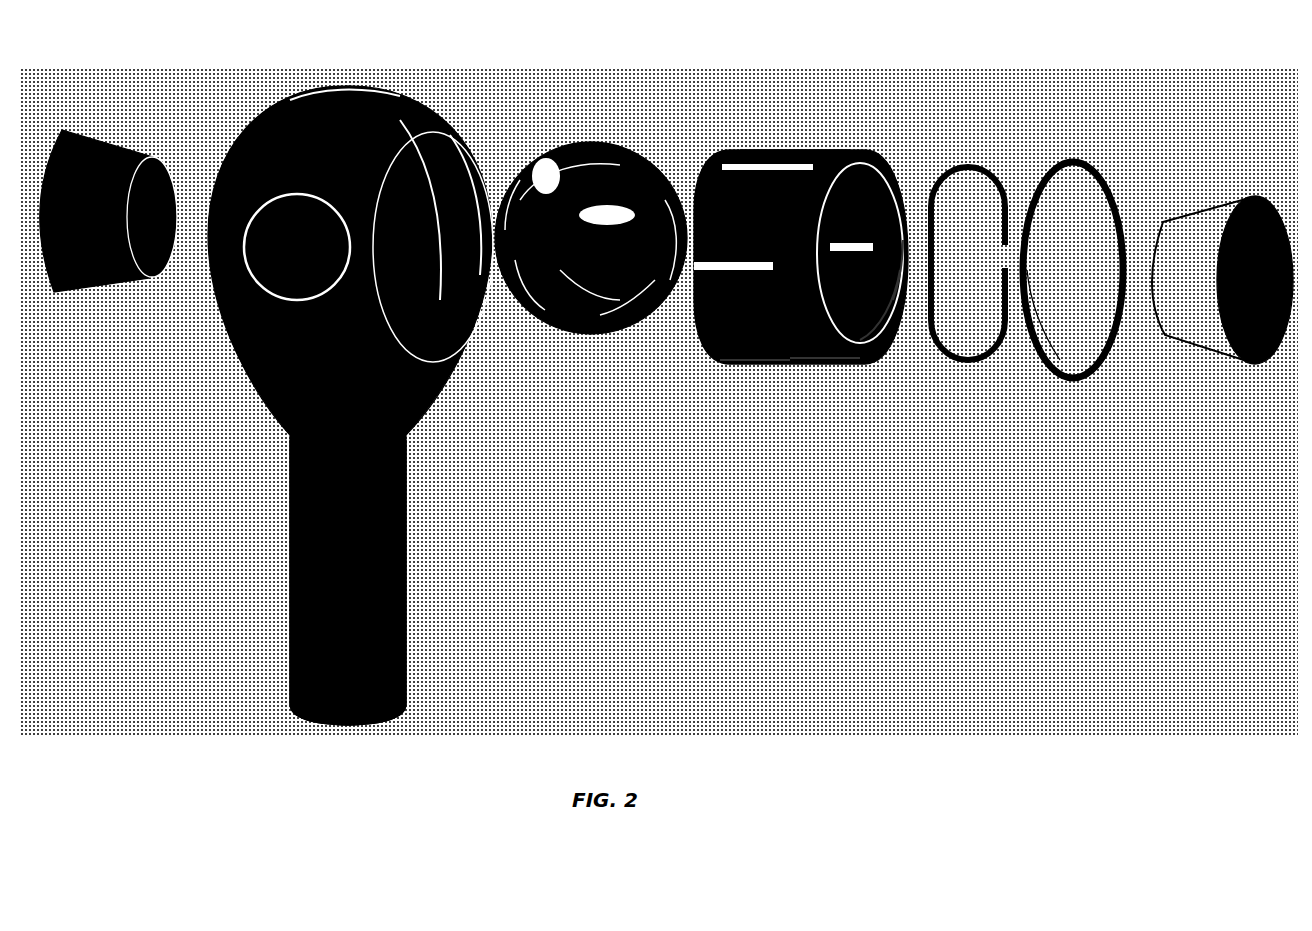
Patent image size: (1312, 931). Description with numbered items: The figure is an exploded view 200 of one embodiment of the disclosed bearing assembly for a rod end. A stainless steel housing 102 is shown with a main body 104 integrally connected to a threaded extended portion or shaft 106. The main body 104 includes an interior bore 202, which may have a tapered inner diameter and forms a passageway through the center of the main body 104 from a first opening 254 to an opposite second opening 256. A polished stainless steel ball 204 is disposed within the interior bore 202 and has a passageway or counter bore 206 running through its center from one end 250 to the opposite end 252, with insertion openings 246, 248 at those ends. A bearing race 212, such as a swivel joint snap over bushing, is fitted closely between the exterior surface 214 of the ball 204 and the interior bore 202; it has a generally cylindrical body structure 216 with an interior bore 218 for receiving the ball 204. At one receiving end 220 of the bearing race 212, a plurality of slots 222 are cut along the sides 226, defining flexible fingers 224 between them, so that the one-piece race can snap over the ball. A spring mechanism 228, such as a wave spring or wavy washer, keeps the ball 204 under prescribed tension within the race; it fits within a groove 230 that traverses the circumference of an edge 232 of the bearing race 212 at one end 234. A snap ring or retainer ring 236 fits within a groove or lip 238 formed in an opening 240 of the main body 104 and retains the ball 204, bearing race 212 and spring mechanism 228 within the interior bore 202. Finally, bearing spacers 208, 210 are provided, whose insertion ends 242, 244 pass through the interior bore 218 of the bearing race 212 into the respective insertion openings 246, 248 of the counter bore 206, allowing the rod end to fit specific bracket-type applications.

The housing 102 is at (339, 387).
The main body 104 is at (355, 88).
The threaded extended portion or shaft 106 is at (295, 568).
The exploded view 200 is at (682, 565).
The interior bore 202 is at (460, 122).
The polished stainless steel ball 204 is at (580, 146).
The passageway or counter bore 206 is at (590, 322).
The bearing spacer 208 is at (45, 285).
The bearing spacer 210 is at (1225, 232).
The bearing race 212 is at (842, 160).
The exterior surface 214 is at (618, 148).
The cylindrical body structure 216 is at (778, 165).
The interior bore 218 is at (872, 348).
The receiving end 220 is at (700, 250).
The slots 222 is at (795, 364).
The fingers 224 is at (748, 148).
The sides 226 is at (815, 362).
The spring mechanism 228 is at (968, 170).
The groove 230 is at (893, 185).
The edge 232 is at (898, 330).
The end 234 is at (890, 185).
The snap ring or retainer ring 236 is at (1078, 165).
The groove or lip 238 is at (480, 128).
The opening 240 is at (488, 333).
The insertion end 242 is at (158, 278).
The insertion end 244 is at (1108, 330).
The insertion opening 246 is at (512, 152).
The insertion opening 248 is at (642, 330).
The end 250 is at (518, 300).
The end 252 is at (666, 185).
The first opening 254 is at (430, 312).
The second opening 256 is at (206, 168).